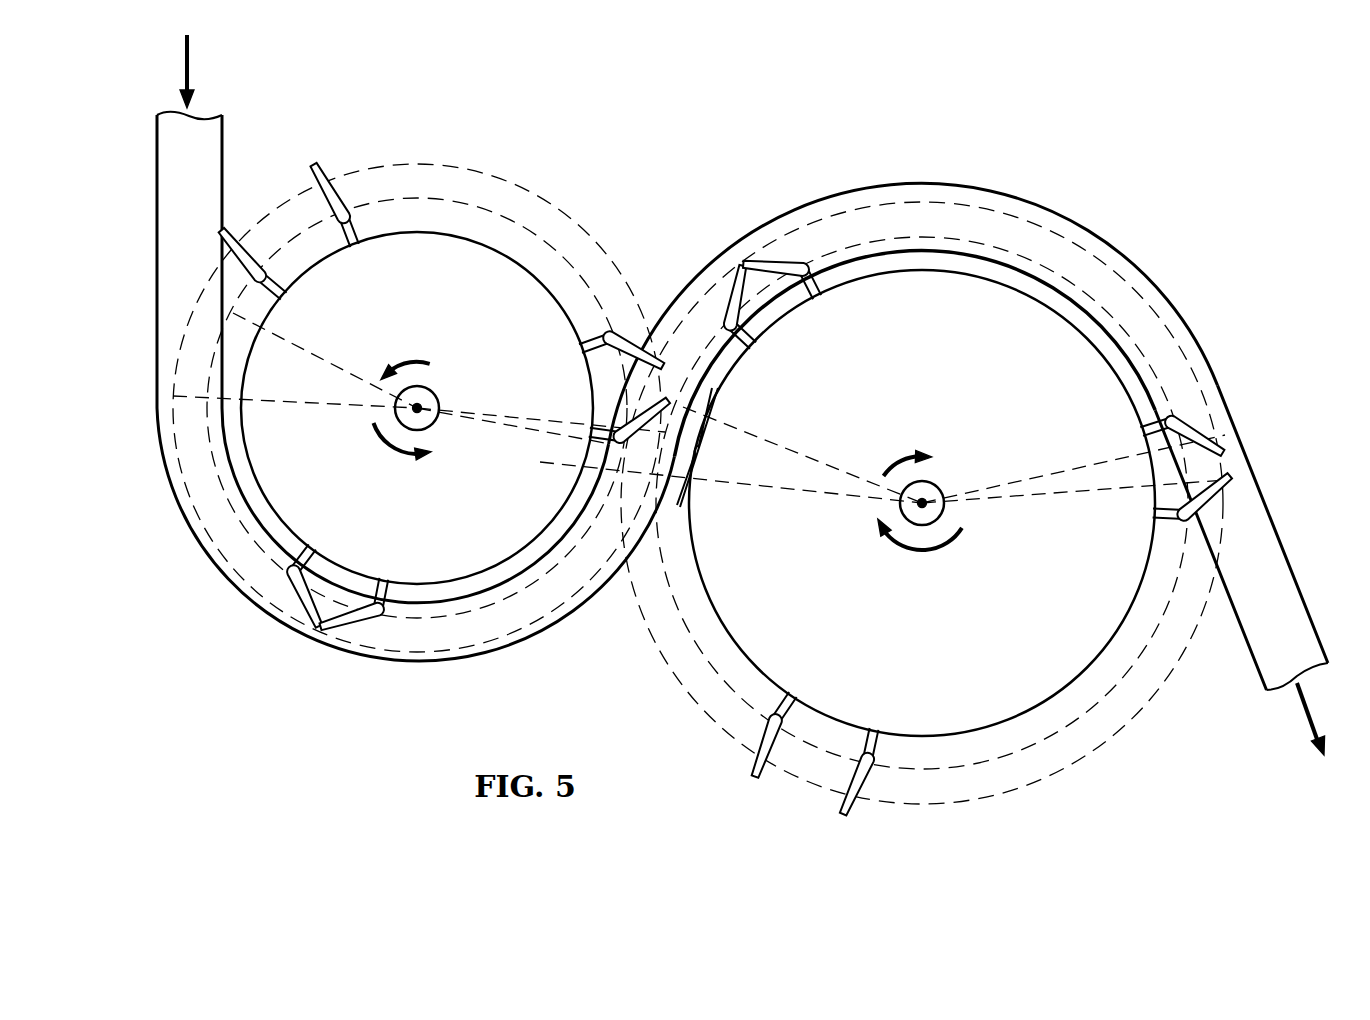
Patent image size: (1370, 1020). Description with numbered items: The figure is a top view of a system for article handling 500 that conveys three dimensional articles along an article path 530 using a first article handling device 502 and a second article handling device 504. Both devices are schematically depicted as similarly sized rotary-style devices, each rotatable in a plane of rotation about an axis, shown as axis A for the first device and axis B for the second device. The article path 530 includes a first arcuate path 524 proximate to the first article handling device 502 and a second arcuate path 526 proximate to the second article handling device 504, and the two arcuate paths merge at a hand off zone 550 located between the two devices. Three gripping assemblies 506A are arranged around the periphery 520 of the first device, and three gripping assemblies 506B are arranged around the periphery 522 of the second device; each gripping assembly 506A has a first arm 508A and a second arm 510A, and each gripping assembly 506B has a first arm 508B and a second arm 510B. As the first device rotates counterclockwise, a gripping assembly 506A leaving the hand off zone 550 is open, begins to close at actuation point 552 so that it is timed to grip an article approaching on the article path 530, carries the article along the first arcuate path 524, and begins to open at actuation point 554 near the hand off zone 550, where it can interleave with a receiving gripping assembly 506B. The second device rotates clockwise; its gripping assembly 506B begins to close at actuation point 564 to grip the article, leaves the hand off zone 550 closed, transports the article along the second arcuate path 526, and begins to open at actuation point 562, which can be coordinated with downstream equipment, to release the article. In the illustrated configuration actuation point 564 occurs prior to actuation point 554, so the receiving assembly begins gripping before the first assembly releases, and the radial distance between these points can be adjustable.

The system for article handling 500 is at (889, 95).
The first article handling device 502 is at (488, 152).
The second article handling device 504 is at (1145, 748).
The gripping assemblies 506A is at (434, 401).
The gripping assemblies 506B is at (989, 504).
The first arm 508A is at (343, 163).
The first arm 508B is at (790, 257).
The second arm 510A is at (267, 255).
The second arm 510B is at (750, 326).
The periphery 520 is at (508, 242).
The periphery 522 is at (1040, 718).
The first arcuate path 524 is at (486, 650).
The second arcuate path 526 is at (975, 203).
The article path 530 is at (156, 188).
The hand off zone 550 is at (702, 447).
The actuation point 552 is at (333, 360).
The actuation point 554 is at (482, 425).
The actuation point 562 is at (1075, 468).
The actuation point 564 is at (790, 489).
The axis A is at (428, 390).
The axis B is at (933, 488).